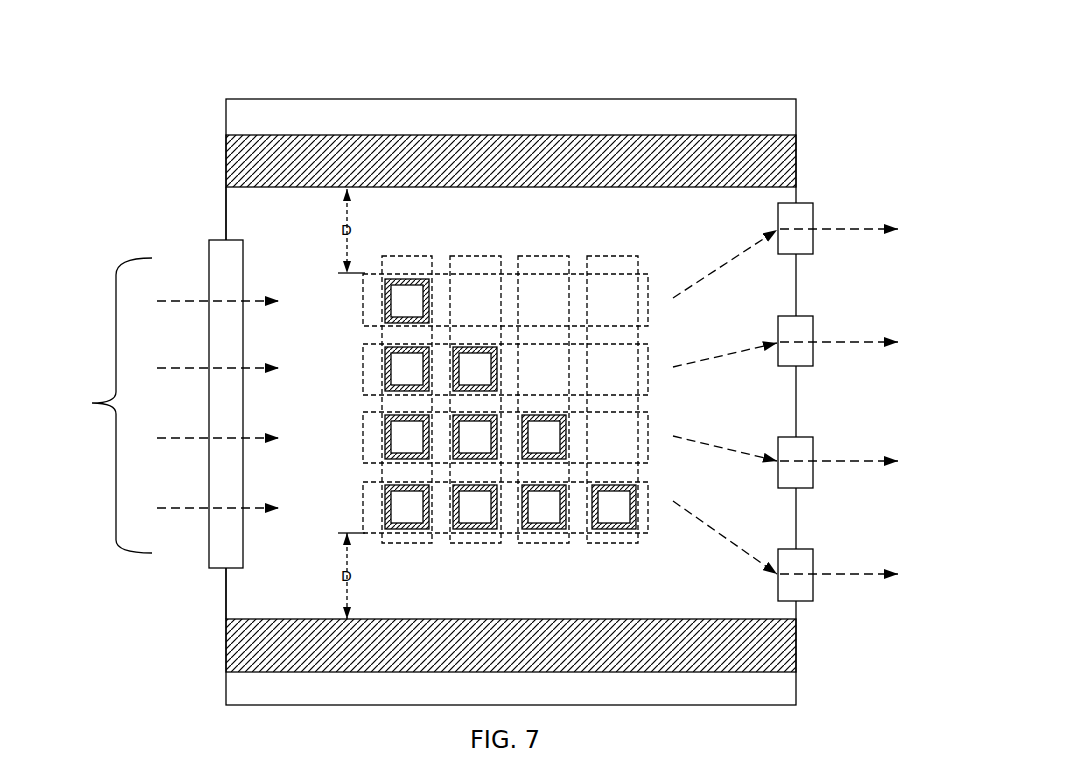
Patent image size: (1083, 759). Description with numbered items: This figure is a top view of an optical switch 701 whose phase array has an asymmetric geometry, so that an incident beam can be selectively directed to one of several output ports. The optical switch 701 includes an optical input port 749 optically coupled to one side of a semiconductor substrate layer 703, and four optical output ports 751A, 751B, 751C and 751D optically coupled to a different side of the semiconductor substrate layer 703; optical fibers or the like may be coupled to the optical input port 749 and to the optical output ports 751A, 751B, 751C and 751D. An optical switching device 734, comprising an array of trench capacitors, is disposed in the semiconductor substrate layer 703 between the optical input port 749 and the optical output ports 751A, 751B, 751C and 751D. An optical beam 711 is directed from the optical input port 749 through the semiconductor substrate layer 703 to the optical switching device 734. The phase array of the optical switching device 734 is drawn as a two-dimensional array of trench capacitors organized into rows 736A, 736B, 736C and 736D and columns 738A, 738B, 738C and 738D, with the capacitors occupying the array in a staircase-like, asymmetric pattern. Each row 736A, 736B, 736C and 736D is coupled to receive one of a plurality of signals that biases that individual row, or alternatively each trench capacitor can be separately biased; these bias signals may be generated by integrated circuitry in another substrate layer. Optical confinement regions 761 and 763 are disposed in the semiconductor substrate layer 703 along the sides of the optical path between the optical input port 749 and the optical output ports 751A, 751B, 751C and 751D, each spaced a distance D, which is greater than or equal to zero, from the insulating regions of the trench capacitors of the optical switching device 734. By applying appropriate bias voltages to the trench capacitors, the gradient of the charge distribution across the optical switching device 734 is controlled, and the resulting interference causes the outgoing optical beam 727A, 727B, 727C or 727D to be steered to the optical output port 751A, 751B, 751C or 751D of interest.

The optical switch 701 is at (726, 61).
The semiconductor substrate layer 703 is at (226, 603).
The optical beam 711 is at (90, 403).
The outgoing optical beam 727A is at (866, 230).
The outgoing optical beam 727B is at (866, 343).
The outgoing optical beam 727C is at (866, 462).
The outgoing optical beam 727D is at (866, 575).
The optical switching device 734 is at (646, 232).
The row of trench capacitors 736A is at (363, 305).
The row of trench capacitors 736B is at (363, 372).
The row of trench capacitors 736C is at (363, 440).
The row of trench capacitors 736D is at (363, 508).
The column of trench capacitors 738A is at (408, 256).
The column of trench capacitors 738B is at (476, 256).
The column of trench capacitors 738C is at (546, 256).
The column of trench capacitors 738D is at (616, 256).
The optical input port 749 is at (212, 240).
The optical output port 751A is at (800, 203).
The optical output port 751B is at (800, 316).
The optical output port 751C is at (800, 437).
The optical output port 751D is at (800, 549).
The optical confinement region 761 is at (226, 165).
The optical confinement region 763 is at (226, 648).